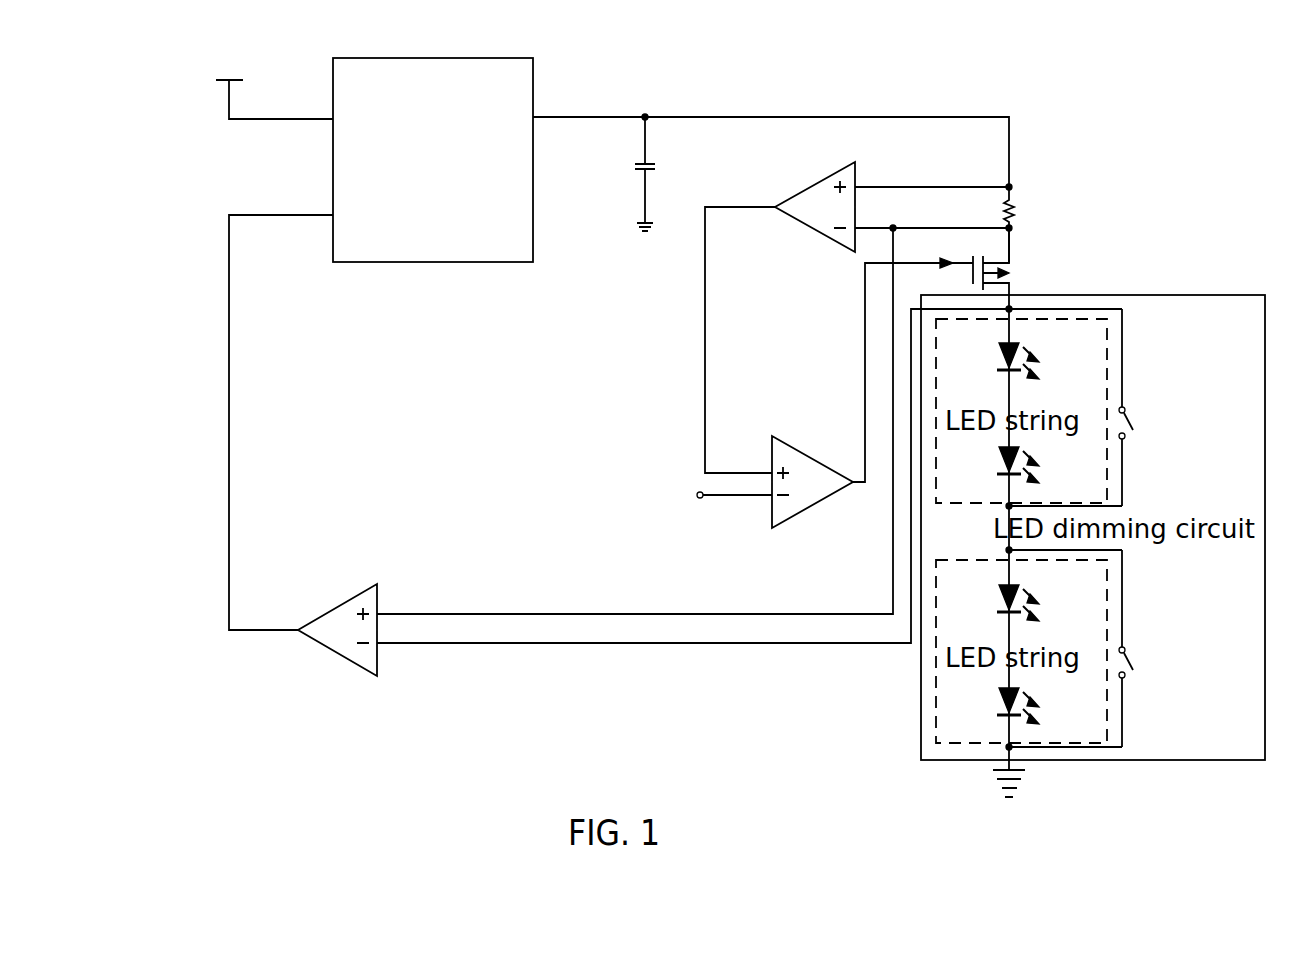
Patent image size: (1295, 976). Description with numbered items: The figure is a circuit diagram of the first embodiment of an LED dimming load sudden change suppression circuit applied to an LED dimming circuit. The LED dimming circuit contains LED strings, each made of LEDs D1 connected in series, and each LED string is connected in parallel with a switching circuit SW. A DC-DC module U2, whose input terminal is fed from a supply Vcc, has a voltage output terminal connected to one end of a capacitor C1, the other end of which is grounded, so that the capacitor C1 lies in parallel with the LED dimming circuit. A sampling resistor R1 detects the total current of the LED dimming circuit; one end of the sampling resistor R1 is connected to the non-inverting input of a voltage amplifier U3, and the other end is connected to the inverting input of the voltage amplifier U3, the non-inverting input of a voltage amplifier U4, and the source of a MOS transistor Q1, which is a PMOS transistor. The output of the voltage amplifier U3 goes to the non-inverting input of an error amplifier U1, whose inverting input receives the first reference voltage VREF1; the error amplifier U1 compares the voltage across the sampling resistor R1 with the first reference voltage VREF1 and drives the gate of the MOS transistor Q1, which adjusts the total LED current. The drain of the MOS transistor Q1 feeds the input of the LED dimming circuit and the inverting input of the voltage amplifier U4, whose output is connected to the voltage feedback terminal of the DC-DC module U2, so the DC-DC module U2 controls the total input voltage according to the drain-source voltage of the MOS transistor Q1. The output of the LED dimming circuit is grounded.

The DC-DC module U2 is at (433, 144).
The supply voltage Vcc is at (274, 95).
The capacitor C1 is at (660, 174).
The voltage amplifier U3 is at (858, 317).
The sampling resistor R1 is at (1026, 225).
The MOS transistor Q1 is at (1014, 268).
The error amplifier U1 is at (838, 393).
The first reference voltage VREF1 is at (721, 510).
The voltage amplifier U4 is at (710, 452).
The LED D1 is at (1038, 533).
The switching circuit SW is at (1149, 528).